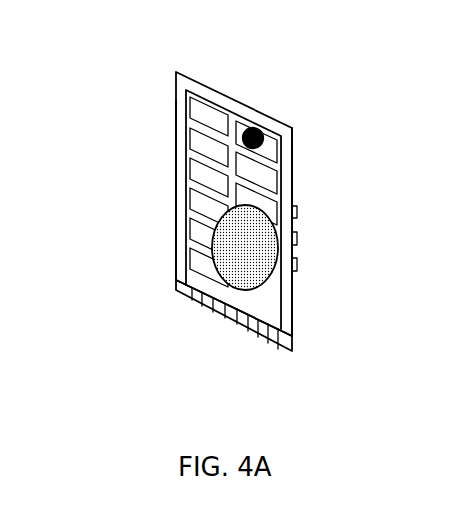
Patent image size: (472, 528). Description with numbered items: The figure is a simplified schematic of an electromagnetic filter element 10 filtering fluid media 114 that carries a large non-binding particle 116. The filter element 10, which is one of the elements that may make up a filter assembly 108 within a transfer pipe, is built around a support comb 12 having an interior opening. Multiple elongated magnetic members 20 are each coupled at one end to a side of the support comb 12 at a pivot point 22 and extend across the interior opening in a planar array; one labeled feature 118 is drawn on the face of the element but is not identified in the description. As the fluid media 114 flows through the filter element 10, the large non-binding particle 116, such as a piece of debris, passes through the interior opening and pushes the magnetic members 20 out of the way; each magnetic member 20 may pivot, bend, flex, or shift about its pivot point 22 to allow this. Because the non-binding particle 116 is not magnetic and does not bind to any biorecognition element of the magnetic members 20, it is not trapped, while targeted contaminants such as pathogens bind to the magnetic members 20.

The electromagnetic filter element 10 is at (156, 92).
The support comb 12 is at (286, 336).
The magnetic members 20 is at (197, 266).
The pivot point 22 is at (177, 282).
The filter assembly 108 is at (340, 115).
The fluid media 114 is at (131, 204).
The non-binding particle 116 is at (240, 272).
The indicator 118 is at (254, 129).